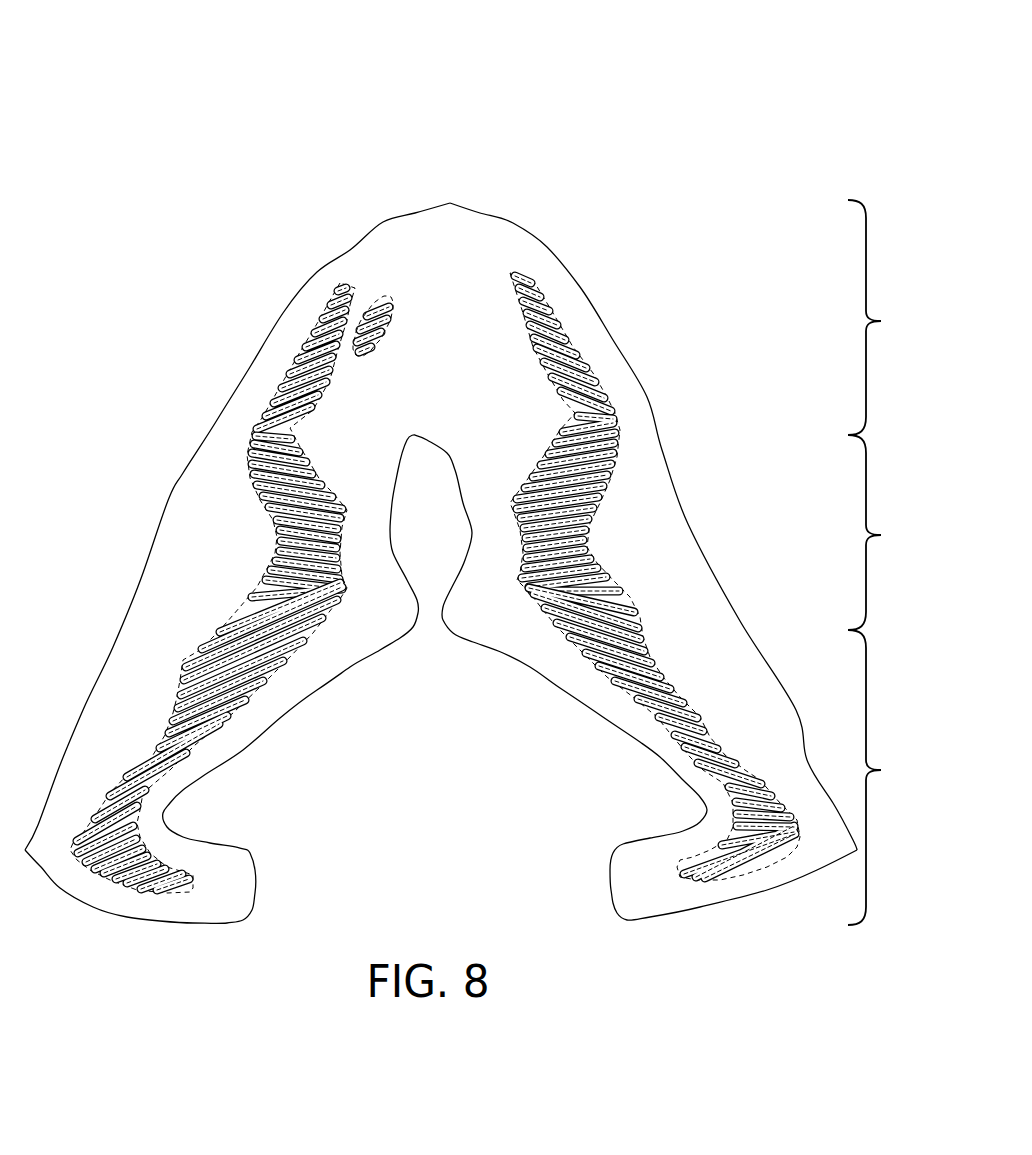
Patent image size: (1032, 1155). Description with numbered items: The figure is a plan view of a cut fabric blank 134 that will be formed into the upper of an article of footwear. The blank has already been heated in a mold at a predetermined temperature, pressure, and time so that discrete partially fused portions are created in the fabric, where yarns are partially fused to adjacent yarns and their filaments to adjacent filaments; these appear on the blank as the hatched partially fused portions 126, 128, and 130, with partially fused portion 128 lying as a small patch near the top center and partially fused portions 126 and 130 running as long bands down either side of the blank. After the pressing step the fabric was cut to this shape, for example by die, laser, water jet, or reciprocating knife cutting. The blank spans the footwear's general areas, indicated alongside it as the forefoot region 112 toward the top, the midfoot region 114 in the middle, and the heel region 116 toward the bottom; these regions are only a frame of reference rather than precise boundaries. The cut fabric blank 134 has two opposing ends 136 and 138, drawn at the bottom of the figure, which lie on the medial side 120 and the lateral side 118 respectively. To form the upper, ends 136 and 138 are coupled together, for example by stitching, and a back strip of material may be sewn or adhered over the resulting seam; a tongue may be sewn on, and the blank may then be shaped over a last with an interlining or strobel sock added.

The forefoot region 112 is at (882, 321).
The midfoot region 114 is at (882, 535).
The heel region 116 is at (882, 770).
The lateral side 118 is at (533, 417).
The medial side 120 is at (327, 430).
The partially fused portion 126 is at (538, 277).
The partially fused portion 128 is at (388, 290).
The partially fused portion 130 is at (278, 374).
The fabric blank 134 is at (584, 139).
The end 136 is at (163, 923).
The end 138 is at (696, 918).